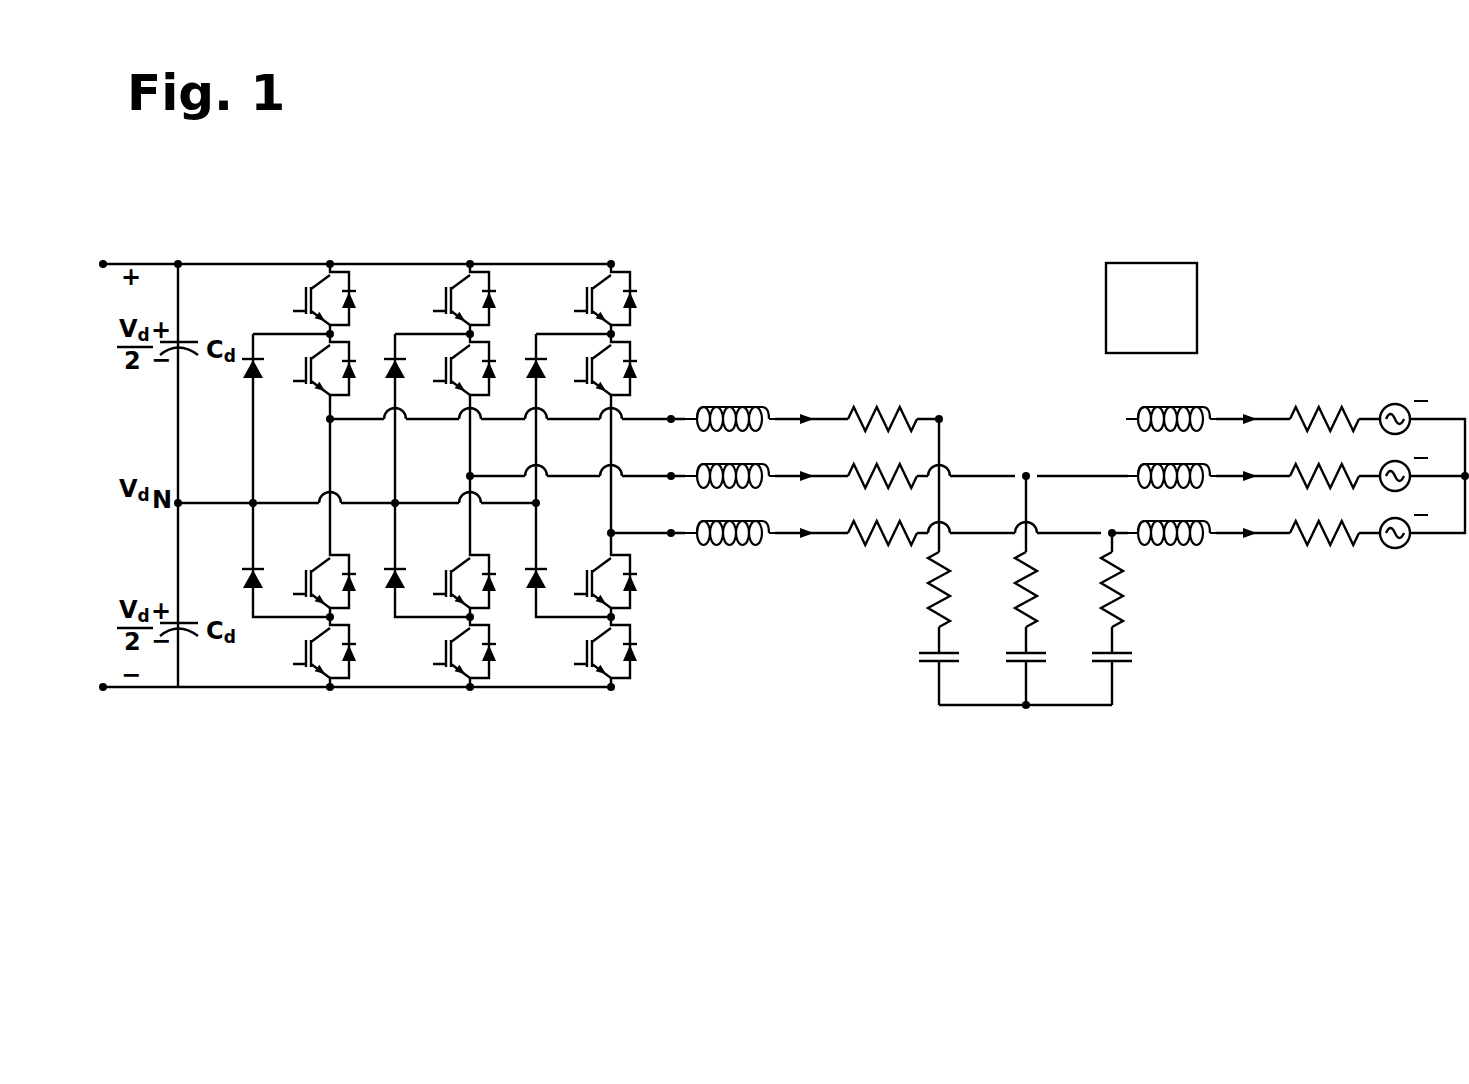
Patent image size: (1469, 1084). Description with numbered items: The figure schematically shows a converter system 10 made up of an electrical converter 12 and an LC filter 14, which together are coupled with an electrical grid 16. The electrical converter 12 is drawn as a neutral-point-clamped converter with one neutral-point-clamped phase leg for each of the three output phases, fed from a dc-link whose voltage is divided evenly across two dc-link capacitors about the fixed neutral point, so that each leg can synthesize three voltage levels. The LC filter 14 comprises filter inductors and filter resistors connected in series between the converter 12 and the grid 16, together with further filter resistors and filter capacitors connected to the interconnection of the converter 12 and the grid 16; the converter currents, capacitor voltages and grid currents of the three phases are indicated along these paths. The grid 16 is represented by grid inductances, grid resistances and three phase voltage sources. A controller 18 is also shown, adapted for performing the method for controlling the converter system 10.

The converter system 10 is at (776, 236).
The electrical converter 12 is at (448, 236).
The LC filter 14 is at (935, 726).
The electrical grid 16 is at (1314, 590).
The controller 18 is at (1197, 305).